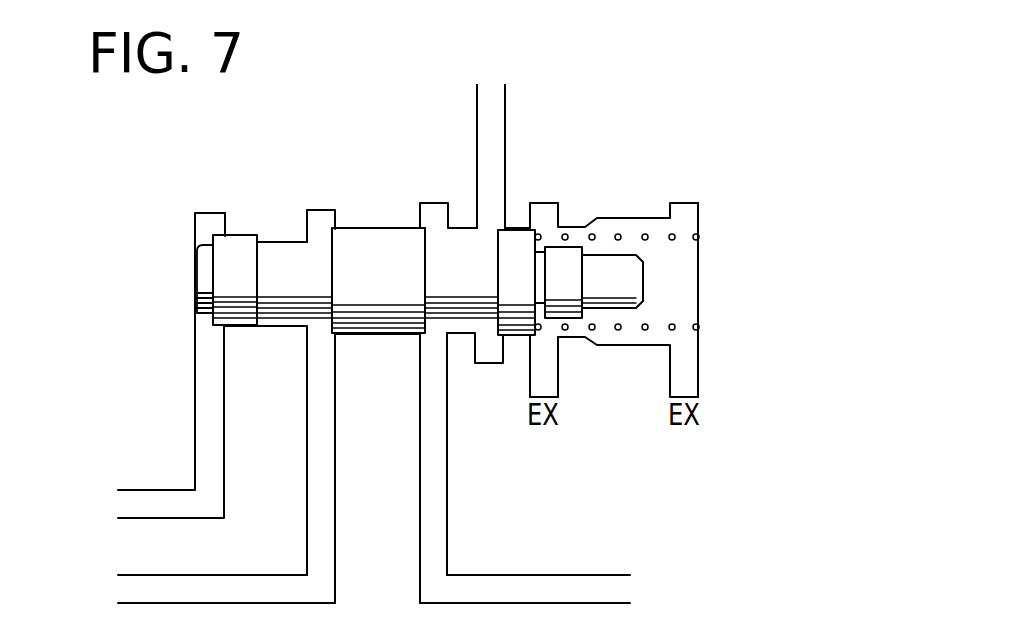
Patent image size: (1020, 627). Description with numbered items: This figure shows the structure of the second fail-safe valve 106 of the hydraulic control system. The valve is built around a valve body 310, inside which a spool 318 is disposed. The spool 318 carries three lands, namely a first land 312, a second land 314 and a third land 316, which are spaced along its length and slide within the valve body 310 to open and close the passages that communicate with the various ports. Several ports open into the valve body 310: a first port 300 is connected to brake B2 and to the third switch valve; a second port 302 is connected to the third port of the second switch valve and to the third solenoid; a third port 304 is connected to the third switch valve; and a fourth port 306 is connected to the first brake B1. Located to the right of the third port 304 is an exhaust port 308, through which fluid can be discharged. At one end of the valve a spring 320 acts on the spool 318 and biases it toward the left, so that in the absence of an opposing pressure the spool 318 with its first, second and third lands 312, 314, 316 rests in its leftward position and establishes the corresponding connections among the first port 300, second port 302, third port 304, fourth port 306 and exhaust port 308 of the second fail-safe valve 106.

The second fail-safe valve 106 is at (742, 270).
The first port 300 is at (208, 346).
The second port 302 is at (322, 353).
The third port 304 is at (435, 350).
The fourth port 306 is at (492, 215).
The exhaust port 308 is at (545, 350).
The valve body 310 is at (290, 212).
The first land 312 is at (237, 245).
The second land 314 is at (367, 245).
The third land 316 is at (515, 240).
The spool 318 is at (196, 287).
The spring 320 is at (645, 236).